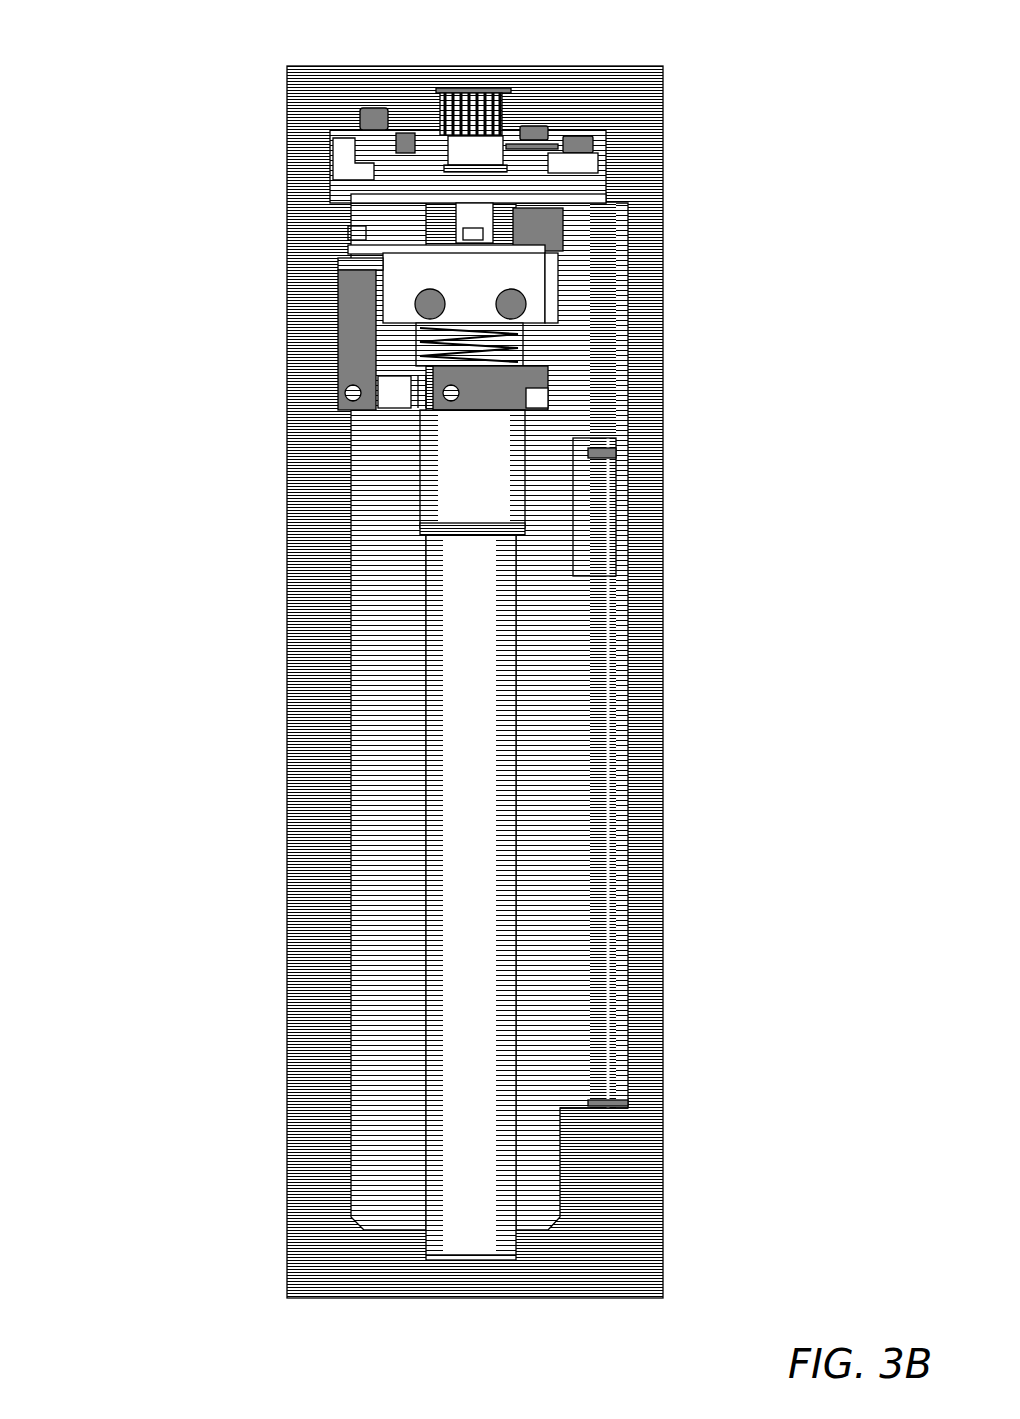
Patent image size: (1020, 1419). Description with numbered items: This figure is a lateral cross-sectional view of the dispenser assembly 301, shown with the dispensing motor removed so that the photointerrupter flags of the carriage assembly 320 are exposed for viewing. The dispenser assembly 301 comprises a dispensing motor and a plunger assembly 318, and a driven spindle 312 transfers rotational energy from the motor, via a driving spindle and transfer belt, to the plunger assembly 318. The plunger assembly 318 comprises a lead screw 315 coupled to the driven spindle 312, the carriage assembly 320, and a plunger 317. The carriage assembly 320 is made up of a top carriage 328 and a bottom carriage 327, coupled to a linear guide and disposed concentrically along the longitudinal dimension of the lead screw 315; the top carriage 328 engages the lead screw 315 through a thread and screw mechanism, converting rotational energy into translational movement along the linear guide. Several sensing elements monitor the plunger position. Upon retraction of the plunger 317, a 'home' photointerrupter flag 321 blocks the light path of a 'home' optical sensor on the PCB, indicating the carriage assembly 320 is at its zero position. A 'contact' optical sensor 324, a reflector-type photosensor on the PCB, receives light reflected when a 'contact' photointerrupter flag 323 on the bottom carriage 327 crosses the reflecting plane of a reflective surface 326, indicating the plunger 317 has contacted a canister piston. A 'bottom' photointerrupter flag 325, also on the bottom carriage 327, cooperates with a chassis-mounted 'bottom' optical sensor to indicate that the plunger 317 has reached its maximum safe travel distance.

The dispenser assembly 301 is at (76, 24).
The driven spindle 312 is at (462, 66).
The lead screw 315 is at (476, 200).
The plunger 317 is at (435, 825).
The plunger assembly 318 is at (462, 1264).
The carriage assembly 320 is at (538, 272).
The 'home' photointerrupter flag 321 is at (552, 210).
The 'contact' photointerrupter flag 323 is at (333, 337).
The 'contact' optical sensor 324 is at (333, 163).
The 'bottom' photointerrupter flag 325 is at (505, 400).
The reflective surface 326 is at (333, 262).
The bottom carriage 327 is at (385, 393).
The top carriage 328 is at (385, 262).